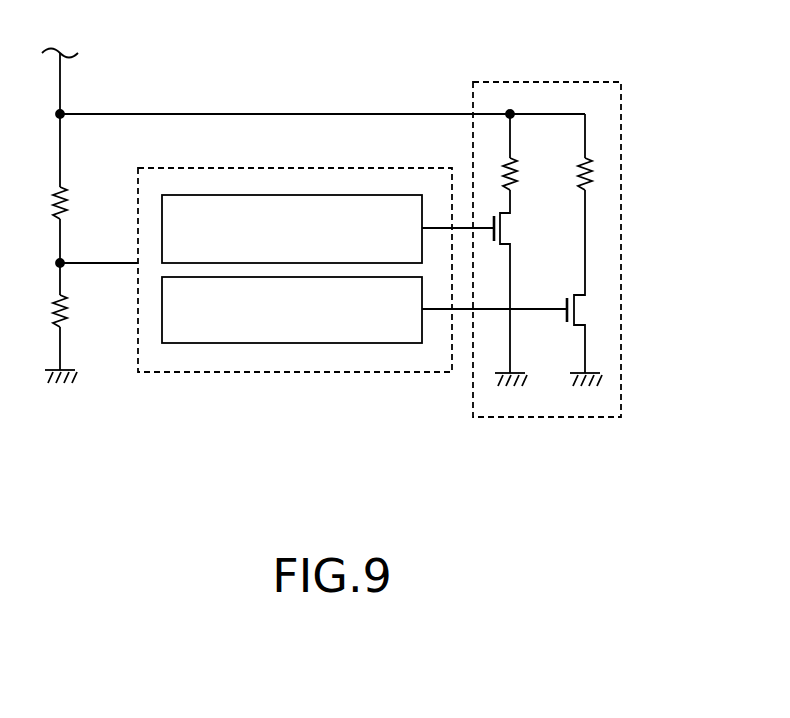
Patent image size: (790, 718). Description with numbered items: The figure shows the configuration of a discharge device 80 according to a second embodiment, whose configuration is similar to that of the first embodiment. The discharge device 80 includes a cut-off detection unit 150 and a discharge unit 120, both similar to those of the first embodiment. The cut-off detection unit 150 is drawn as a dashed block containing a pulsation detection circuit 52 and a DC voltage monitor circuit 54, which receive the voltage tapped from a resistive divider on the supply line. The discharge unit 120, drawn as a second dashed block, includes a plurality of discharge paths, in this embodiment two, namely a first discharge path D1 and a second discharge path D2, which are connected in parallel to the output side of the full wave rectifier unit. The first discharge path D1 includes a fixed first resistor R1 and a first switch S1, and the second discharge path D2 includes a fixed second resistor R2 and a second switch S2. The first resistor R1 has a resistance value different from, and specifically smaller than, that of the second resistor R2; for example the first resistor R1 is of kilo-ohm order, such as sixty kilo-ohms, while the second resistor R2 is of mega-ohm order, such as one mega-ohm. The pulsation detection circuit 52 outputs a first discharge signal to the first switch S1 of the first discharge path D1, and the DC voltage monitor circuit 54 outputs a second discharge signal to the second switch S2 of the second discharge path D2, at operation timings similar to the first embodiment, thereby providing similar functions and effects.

The discharge device 80 is at (345, 88).
The pulsation detection circuit 52 is at (237, 194).
The DC voltage monitor circuit 54 is at (235, 344).
The cut-off detection unit 150 is at (367, 373).
The discharge unit 120 is at (549, 418).
The first resistor R1 is at (514, 158).
The second resistor R2 is at (591, 159).
The first discharge path D1 is at (497, 133).
The second discharge path D2 is at (600, 125).
The first switch S1 is at (505, 226).
The second switch S2 is at (590, 304).